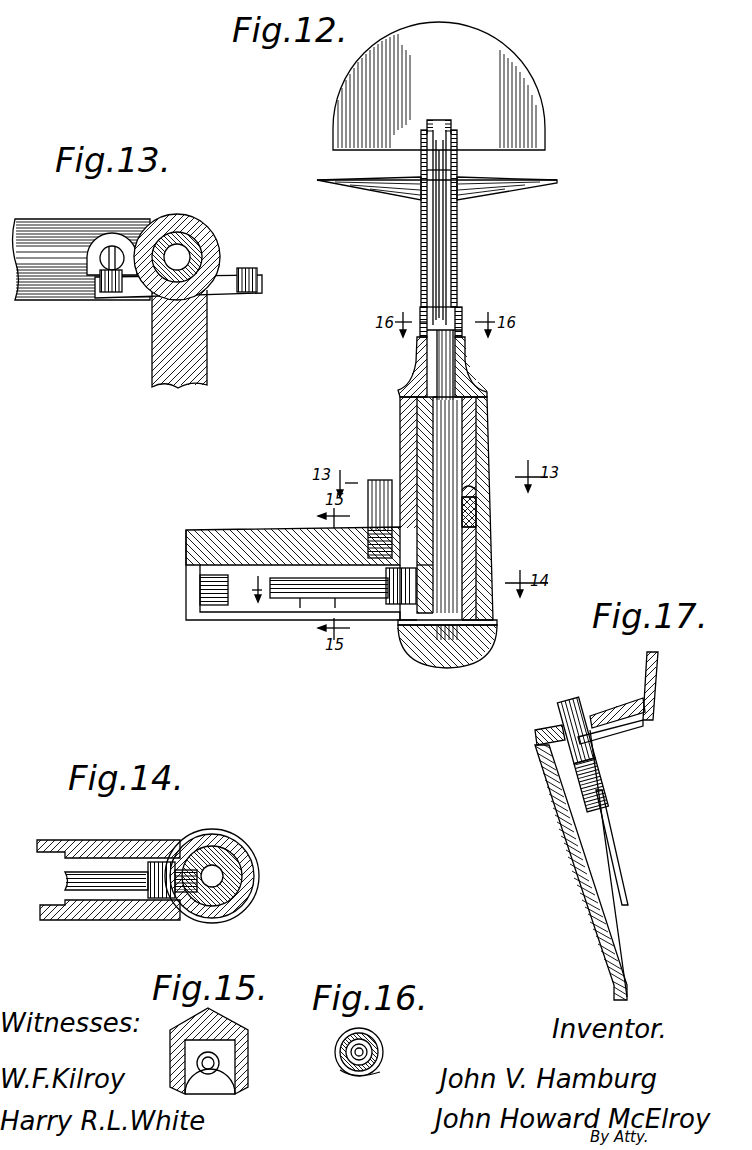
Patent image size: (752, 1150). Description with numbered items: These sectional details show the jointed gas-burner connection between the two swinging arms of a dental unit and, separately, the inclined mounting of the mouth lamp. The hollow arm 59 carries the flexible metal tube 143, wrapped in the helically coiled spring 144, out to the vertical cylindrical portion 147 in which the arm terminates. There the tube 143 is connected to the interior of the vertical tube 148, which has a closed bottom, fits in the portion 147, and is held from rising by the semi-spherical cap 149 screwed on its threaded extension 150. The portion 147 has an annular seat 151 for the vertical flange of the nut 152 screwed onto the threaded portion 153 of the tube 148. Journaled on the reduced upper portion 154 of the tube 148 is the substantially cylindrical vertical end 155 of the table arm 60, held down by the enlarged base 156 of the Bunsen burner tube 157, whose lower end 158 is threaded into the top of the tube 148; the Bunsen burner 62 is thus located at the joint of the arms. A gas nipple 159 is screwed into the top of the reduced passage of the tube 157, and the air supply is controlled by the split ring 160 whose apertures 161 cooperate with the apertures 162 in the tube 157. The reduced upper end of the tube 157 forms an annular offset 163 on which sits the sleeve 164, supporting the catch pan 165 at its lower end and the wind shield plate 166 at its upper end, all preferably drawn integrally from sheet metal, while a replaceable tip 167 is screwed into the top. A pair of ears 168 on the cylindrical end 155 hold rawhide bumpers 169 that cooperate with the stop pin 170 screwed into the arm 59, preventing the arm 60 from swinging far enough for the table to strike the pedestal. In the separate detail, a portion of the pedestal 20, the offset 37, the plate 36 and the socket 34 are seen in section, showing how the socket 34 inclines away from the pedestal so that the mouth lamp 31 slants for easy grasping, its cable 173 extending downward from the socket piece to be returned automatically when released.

In FIG. 17, the pedestal 20 is at (656, 682).
In FIG. 17, the mouth lamp 31 is at (570, 700).
In FIG. 17, the socket 34 is at (552, 758).
In FIG. 17, the plate 36 is at (610, 714).
In FIG. 17, the offset 37 is at (565, 830).
In FIG. 12, the arm 59 is at (230, 540).
In FIG. 13, the arm 59 is at (35, 232).
In FIG. 14, the arm 59 is at (72, 842).
In FIG. 15, the arm 59 is at (226, 1022).
In FIG. 13, the arm 60 is at (205, 362).
In FIG. 12, the Bunsen burner 62 is at (459, 280).
In FIG. 12, the flexible metal tube 143 is at (282, 600).
In FIG. 14, the flexible metal tube 143 is at (102, 878).
In FIG. 15, the flexible metal tube 143 is at (212, 1075).
In FIG. 12, the helically coiled spring 144 is at (233, 590).
In FIG. 12, the vertical cylindrical portion 147 is at (490, 565).
In FIG. 14, the vertical cylindrical portion 147 is at (218, 832).
In FIG. 12, the vertical tube 148 is at (478, 548).
In FIG. 13, the vertical tube 148 is at (175, 225).
In FIG. 14, the vertical tube 148 is at (250, 866).
In FIG. 12, the semi-spherical cap 149 is at (410, 635).
In FIG. 12, the threaded extension 150 is at (447, 668).
In FIG. 12, the annular seat 151 is at (478, 532).
In FIG. 12, the nut 152 is at (478, 518).
In FIG. 12, the threaded portion 153 is at (465, 505).
In FIG. 12, the reduced upper portion 154 is at (462, 428).
In FIG. 13, the reduced upper portion 154 is at (192, 252).
In FIG. 12, the cylindrical vertical end 155 is at (488, 398).
In FIG. 13, the cylindrical vertical end 155 is at (200, 238).
In FIG. 12, the enlarged base 156 is at (470, 372).
In FIG. 12, the Bunsen burner tube 157 is at (458, 245).
In FIG. 16, the Bunsen burner tube 157 is at (380, 1048).
In FIG. 12, the lower end 158 is at (400, 406).
In FIG. 12, the gas nipple 159 is at (417, 346).
In FIG. 16, the gas nipple 159 is at (383, 1053).
In FIG. 12, the split ring 160 is at (462, 312).
In FIG. 16, the split ring 160 is at (362, 1035).
In FIG. 12, the apertures 161 is at (418, 318).
In FIG. 16, the apertures 161 is at (348, 1072).
In FIG. 12, the apertures 162 is at (423, 305).
In FIG. 16, the apertures 162 is at (345, 1052).
In FIG. 12, the annular offset 163 is at (458, 200).
In FIG. 12, the sleeve 164 is at (458, 172).
In FIG. 12, the catch pan 165 is at (372, 178).
In FIG. 12, the wind shield plate 166 is at (503, 90).
In FIG. 12, the replaceable tip 167 is at (438, 118).
In FIG. 13, the ears 168 is at (130, 293).
In FIG. 13, the rawhide bumpers 169 is at (105, 292).
In FIG. 12, the stop pin 170 is at (379, 478).
In FIG. 13, the stop pin 170 is at (113, 245).
In FIG. 17, the cable 173 is at (612, 850).